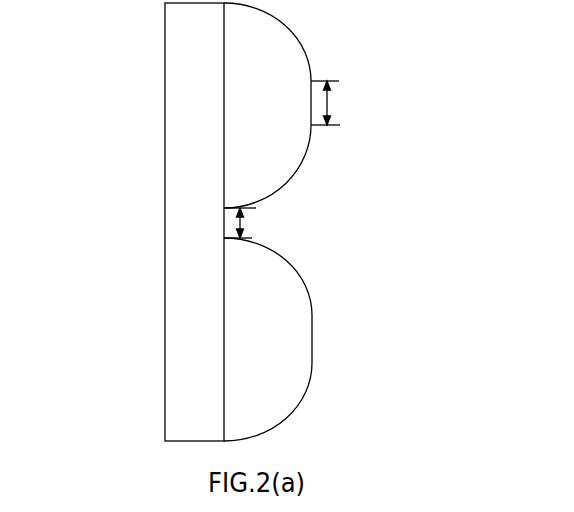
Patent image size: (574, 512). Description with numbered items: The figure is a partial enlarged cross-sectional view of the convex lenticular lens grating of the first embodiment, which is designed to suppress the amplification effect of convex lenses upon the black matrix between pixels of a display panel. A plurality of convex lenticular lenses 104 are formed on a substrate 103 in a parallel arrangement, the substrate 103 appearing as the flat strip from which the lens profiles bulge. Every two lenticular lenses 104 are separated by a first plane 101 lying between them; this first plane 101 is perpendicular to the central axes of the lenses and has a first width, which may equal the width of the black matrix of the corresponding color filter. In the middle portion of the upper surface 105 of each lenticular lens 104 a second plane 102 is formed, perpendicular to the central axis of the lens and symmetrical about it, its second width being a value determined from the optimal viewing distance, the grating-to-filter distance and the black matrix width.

The first plane 101 is at (228, 227).
The second plane 102 is at (313, 113).
The substrate 103 is at (178, 136).
The convex lenticular lens 104 is at (285, 155).
The upper surface 105 is at (307, 57).